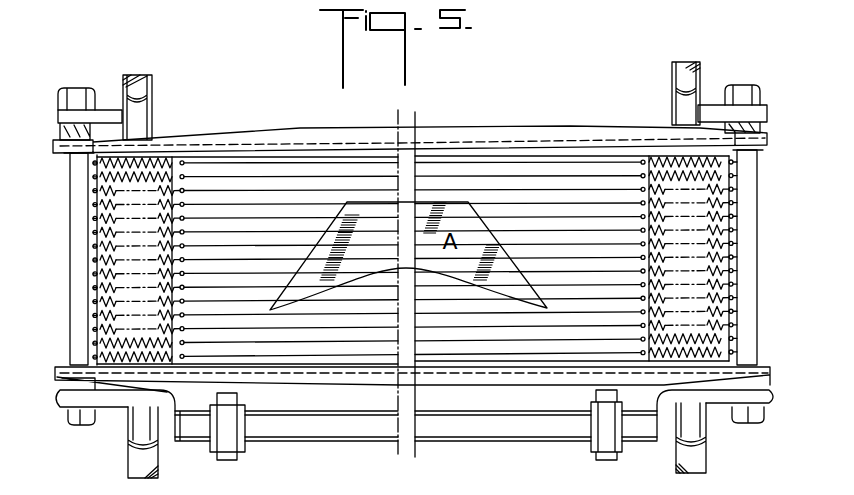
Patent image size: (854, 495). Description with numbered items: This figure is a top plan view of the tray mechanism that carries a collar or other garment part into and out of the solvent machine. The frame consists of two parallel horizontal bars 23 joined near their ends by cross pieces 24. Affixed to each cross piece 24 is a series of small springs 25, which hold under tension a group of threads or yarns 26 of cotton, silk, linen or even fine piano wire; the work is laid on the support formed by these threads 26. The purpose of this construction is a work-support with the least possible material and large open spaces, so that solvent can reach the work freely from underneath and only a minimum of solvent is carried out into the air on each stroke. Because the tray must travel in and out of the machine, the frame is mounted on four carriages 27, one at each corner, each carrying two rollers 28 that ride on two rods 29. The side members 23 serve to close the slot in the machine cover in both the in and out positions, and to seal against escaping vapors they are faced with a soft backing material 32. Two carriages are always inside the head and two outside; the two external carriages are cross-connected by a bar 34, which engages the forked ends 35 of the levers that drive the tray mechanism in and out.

The horizontal bar 23 is at (217, 132).
The cross piece 24 is at (70, 200).
The small spring 25 is at (97, 218).
The threads or yarns 26 is at (323, 163).
The carriage 27 is at (103, 113).
The roller 28 is at (135, 113).
The rod 29 is at (134, 82).
The soft backing material 32 is at (268, 150).
The bar 34 is at (340, 438).
The forked end 35 is at (222, 455).